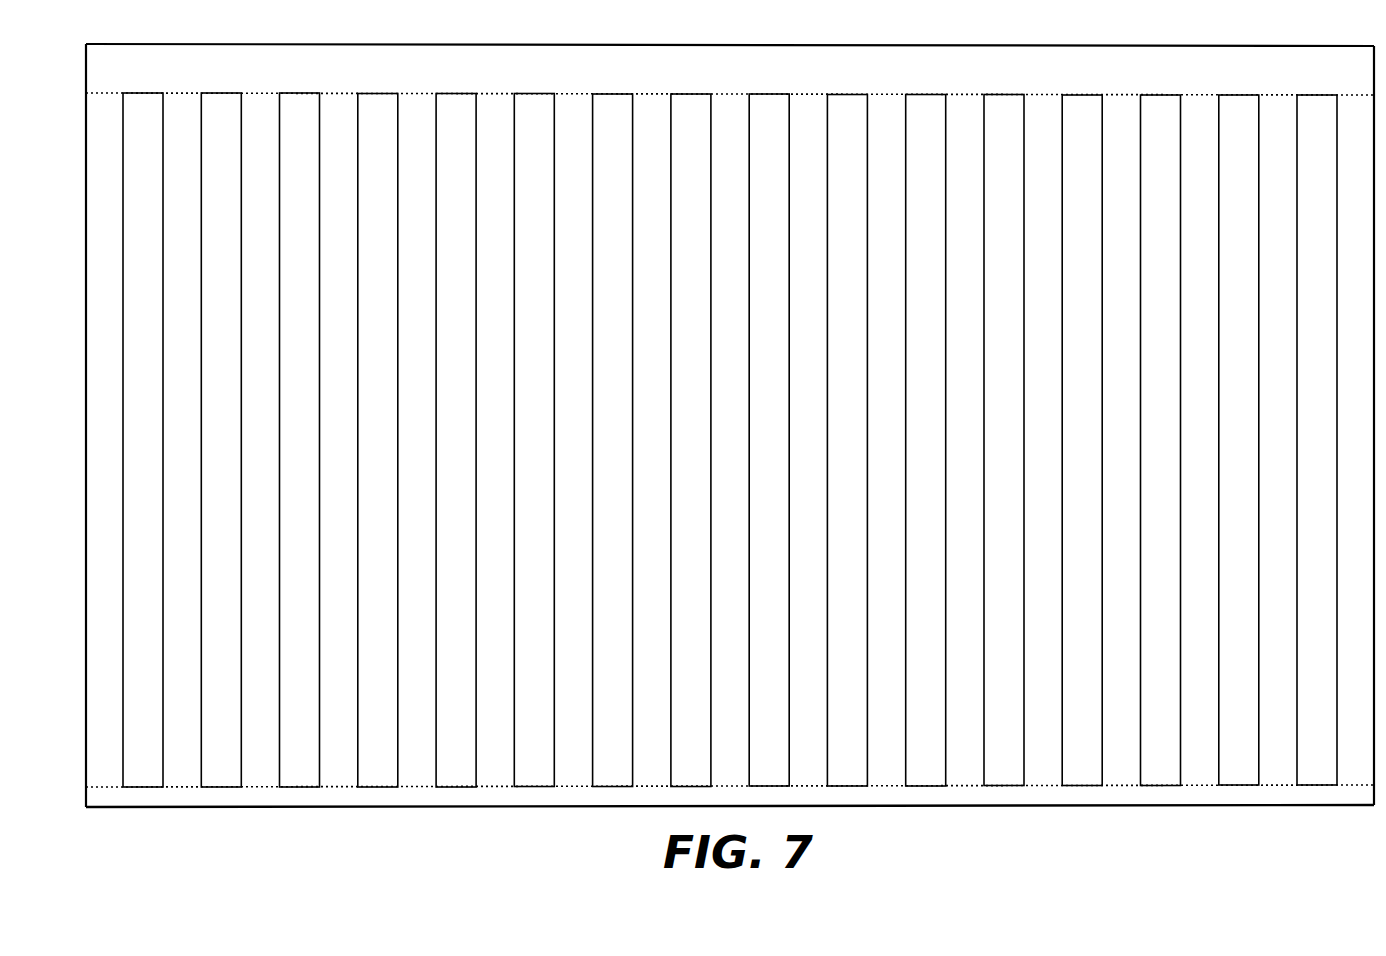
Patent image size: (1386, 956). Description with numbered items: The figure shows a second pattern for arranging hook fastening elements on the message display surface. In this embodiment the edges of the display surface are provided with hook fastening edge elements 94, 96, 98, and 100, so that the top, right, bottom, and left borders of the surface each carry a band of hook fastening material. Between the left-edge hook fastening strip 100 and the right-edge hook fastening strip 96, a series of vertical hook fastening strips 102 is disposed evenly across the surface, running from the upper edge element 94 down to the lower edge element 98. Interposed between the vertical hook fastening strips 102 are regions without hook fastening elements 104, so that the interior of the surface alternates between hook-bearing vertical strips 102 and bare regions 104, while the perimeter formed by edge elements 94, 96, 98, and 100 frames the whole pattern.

The hook fastening edge element 94 is at (798, 81).
The right-edge hook fastening strip 96 is at (1352, 772).
The hook fastening edge element 98 is at (1128, 795).
The left-edge hook fastening strip 100 is at (113, 758).
The vertical hook fastening strips 102 is at (200, 317).
The regions without hook fastening elements 104 is at (160, 283).